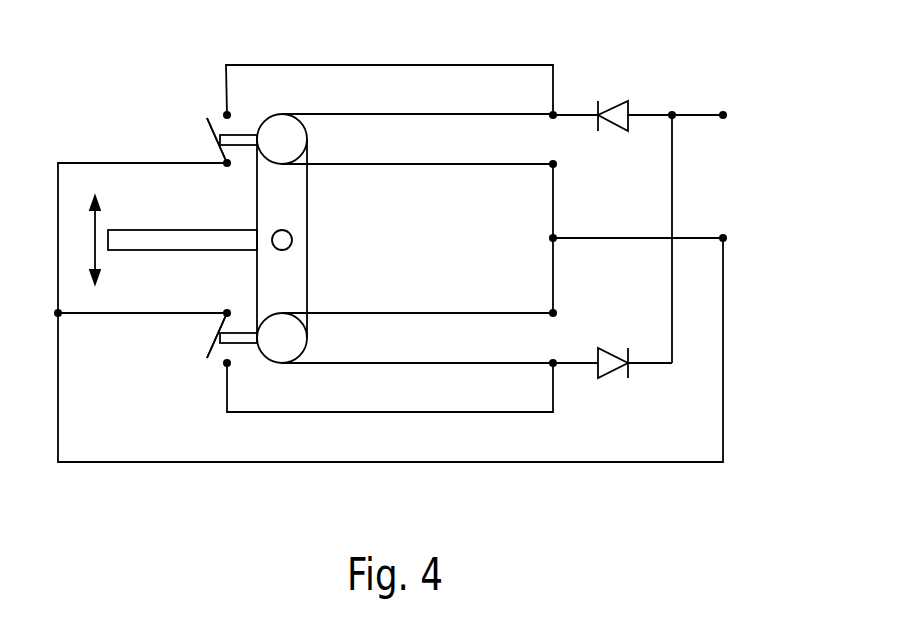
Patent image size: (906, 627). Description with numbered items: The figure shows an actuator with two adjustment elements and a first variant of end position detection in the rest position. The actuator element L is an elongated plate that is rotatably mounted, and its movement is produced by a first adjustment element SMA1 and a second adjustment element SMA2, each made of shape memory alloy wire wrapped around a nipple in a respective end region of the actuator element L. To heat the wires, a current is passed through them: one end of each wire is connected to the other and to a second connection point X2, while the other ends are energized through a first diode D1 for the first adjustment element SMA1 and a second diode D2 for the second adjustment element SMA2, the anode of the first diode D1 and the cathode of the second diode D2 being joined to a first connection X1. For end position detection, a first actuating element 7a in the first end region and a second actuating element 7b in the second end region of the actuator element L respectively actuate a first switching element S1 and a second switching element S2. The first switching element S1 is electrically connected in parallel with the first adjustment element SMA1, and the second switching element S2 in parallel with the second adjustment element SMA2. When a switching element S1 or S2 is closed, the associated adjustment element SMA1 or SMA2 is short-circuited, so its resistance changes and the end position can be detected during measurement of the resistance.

The first actuating element 7a is at (238, 140).
The second actuating element 7b is at (238, 337).
The first switching element S1 is at (192, 140).
The second switching element S2 is at (192, 335).
The first adjustment element SMA1 is at (417, 139).
The second adjustment element SMA2 is at (417, 338).
The first diode D1 is at (614, 136).
The second diode D2 is at (614, 346).
The first connection X1 is at (723, 117).
The second connection point X2 is at (663, 240).
The actuator element L is at (191, 237).